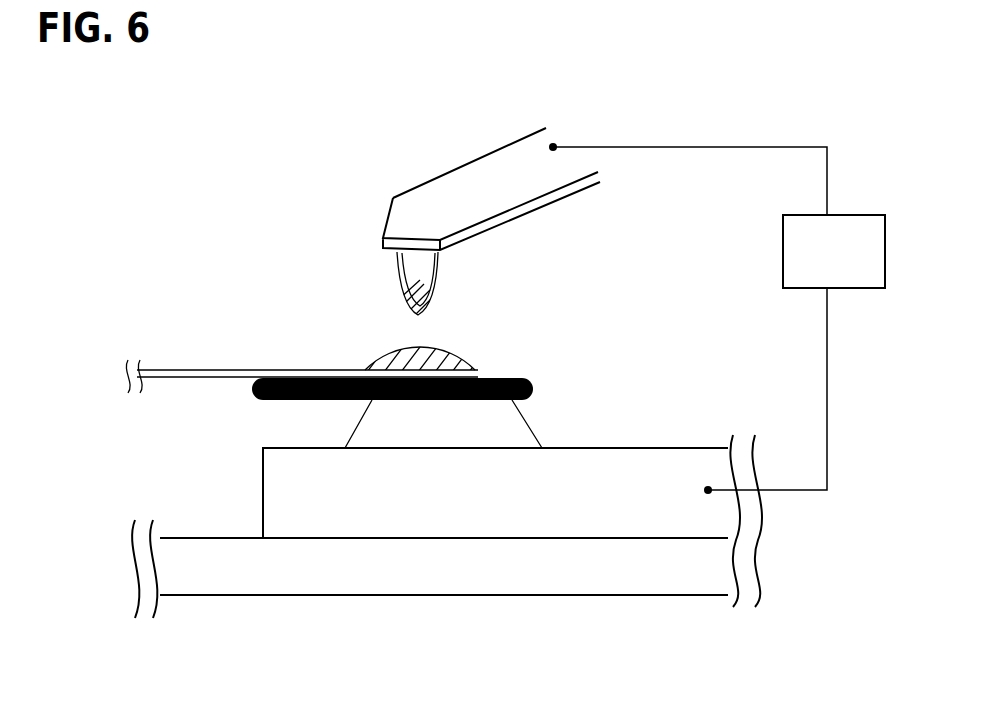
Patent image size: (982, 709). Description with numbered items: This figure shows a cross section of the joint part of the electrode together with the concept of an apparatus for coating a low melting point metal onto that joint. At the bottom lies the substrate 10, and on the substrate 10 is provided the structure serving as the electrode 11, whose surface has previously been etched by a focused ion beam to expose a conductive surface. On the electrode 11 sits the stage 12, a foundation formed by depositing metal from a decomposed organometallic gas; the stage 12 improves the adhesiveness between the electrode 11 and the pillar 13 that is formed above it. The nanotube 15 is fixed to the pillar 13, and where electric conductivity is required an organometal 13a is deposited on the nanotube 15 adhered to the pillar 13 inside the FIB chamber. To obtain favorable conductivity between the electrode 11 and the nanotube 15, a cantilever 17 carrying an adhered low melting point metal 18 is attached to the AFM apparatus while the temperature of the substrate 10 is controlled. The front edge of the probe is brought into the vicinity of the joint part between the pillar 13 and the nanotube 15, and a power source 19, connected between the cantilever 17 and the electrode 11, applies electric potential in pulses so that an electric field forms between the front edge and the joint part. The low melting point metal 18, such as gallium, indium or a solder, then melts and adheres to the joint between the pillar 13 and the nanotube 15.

The substrate 10 is at (207, 552).
The electrode 11 is at (695, 462).
The stage 12 is at (517, 428).
The pillar 13 is at (533, 383).
The organometal 13a is at (383, 360).
The nanotube 15 is at (175, 370).
The cantilever 17 is at (433, 197).
The low melting point metal 18 is at (433, 293).
The power source 19 is at (860, 215).